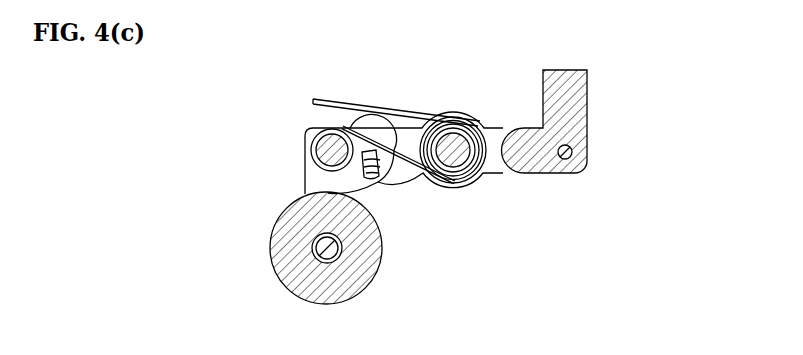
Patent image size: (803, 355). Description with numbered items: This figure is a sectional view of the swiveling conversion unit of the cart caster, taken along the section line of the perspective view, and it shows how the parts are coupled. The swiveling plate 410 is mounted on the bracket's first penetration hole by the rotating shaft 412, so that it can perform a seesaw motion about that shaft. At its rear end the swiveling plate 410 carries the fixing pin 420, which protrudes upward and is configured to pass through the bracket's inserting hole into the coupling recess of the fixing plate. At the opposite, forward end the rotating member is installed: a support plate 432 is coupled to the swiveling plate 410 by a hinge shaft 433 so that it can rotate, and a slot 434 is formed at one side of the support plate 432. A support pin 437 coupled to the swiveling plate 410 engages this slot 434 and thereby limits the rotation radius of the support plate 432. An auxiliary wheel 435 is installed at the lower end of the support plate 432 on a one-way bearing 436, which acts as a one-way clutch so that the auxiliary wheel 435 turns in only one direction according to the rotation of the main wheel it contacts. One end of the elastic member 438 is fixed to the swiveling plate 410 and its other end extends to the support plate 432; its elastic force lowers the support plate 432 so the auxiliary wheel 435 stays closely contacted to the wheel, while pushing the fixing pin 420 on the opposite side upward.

The swiveling plate 410 is at (453, 128).
The rotating shaft 412 is at (478, 119).
The fixing pin 420 is at (587, 93).
The support plate 432 is at (305, 172).
The hinge shaft 433 is at (313, 148).
The slot 434 is at (372, 167).
The auxiliary wheel 435 is at (383, 247).
The one-way bearing 436 is at (313, 250).
The support pin 437 is at (378, 162).
The elastic member 438 is at (366, 99).